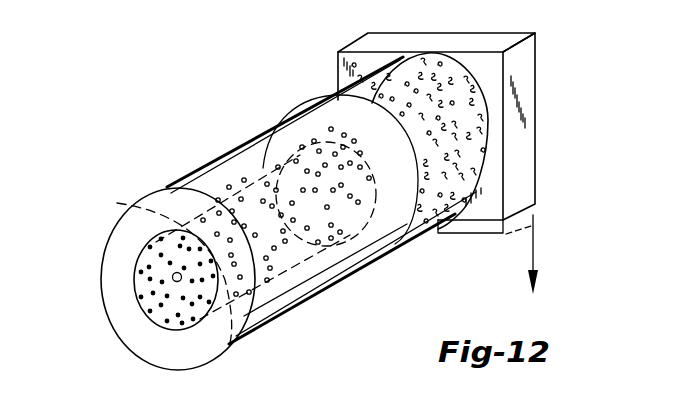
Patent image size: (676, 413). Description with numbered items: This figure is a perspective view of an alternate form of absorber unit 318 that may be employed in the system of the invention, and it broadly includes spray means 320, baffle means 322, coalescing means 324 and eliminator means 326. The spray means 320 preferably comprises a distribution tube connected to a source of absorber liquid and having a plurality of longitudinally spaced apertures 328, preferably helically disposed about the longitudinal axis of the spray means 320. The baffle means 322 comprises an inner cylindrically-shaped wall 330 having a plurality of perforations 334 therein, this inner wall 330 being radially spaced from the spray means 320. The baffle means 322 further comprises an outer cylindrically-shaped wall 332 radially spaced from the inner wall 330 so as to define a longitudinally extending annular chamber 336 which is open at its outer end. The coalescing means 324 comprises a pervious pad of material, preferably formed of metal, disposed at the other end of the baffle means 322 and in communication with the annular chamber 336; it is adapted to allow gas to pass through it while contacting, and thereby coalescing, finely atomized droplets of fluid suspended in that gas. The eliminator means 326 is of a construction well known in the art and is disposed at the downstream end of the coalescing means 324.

The absorber unit 318 is at (231, 138).
The spray means 320 is at (172, 277).
The baffle means 322 is at (312, 275).
The coalescing means 324 is at (434, 228).
The eliminator means 326 is at (529, 153).
The apertures 328 is at (327, 238).
The inner cylindrically-shaped wall 330 is at (233, 345).
The outer cylindrically-shaped wall 332 is at (287, 312).
The perforations 334 is at (165, 188).
The annular chamber 336 is at (163, 350).